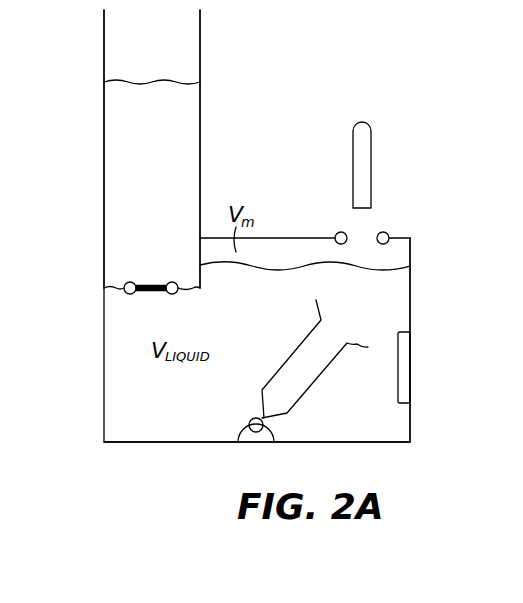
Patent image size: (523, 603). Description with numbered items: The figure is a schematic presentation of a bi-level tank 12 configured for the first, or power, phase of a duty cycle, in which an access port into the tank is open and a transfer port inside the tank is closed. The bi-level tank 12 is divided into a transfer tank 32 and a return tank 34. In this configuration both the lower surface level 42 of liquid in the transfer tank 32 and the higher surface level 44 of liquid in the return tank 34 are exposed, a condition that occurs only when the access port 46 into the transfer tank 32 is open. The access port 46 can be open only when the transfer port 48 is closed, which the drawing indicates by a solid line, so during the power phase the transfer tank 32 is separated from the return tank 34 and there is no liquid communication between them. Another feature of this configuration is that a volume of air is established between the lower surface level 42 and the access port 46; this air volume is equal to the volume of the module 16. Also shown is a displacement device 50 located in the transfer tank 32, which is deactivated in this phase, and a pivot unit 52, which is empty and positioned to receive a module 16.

The bi-level tank 12 is at (100, 357).
The module 16 is at (360, 160).
The transfer tank 32 is at (150, 444).
The return tank 34 is at (192, 97).
The lower surface level 42 is at (397, 268).
The upper surface level 44 is at (153, 80).
The access port 46 is at (385, 232).
The transfer port 48 is at (130, 282).
The displacement device 50 is at (410, 370).
The pivot unit 52 is at (293, 352).